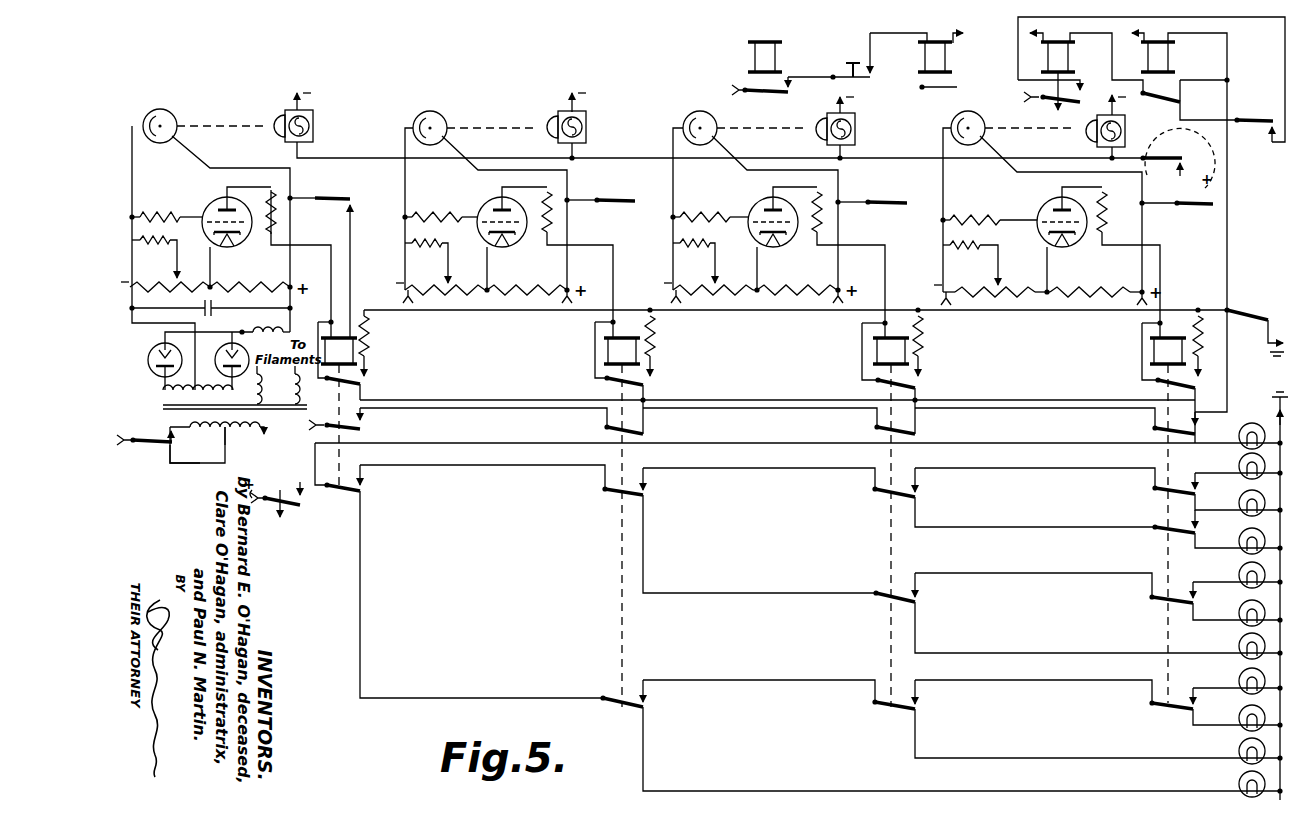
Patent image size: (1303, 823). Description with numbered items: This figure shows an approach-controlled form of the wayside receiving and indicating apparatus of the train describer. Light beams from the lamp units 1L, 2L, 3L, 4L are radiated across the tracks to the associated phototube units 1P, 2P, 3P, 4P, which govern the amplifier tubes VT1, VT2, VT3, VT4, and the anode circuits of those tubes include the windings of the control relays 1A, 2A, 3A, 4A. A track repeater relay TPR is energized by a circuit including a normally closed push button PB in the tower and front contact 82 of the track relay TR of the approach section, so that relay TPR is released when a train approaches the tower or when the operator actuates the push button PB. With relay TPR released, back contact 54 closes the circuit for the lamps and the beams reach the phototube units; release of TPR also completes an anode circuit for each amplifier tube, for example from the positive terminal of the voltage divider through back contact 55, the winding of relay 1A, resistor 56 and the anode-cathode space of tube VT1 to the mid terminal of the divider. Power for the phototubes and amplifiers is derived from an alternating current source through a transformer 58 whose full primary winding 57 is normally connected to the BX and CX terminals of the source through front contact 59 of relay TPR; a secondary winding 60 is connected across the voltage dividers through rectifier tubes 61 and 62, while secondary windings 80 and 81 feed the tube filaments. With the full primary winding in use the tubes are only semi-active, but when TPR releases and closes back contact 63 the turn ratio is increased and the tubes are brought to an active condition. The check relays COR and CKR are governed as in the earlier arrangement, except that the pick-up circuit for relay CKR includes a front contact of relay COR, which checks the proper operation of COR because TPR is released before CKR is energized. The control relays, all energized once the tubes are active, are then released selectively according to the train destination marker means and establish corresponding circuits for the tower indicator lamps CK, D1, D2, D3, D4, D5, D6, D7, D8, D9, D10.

The receiving relay 1P is at (166, 114).
The receiving relay 2P is at (436, 114).
The receiving relay 3P is at (695, 116).
The receiving relay 4P is at (958, 114).
The light source 1L is at (288, 112).
The light source 2L is at (558, 114).
The light source 3L is at (852, 113).
The light source 4L is at (1131, 124).
The amplifier tube VT1 is at (221, 198).
The vacuum tube VT2 is at (492, 198).
The vacuum tube VT3 is at (765, 198).
The vacuum tube VT4 is at (1045, 201).
The track repeater relay TPR is at (697, 242).
The back contact of relay TPR 55 is at (348, 216).
The resistor 56 is at (268, 235).
The track relay TR is at (764, 43).
The push button PB is at (845, 58).
The front contact of track relay TR 82 is at (779, 92).
The check relay CKR is at (1052, 58).
The check relay COR is at (1160, 56).
The back contact of relay TPR 54 is at (1183, 158).
The relay 1A is at (353, 353).
The relay 2A is at (607, 352).
The relay 3A is at (875, 352).
The relay 4A is at (1153, 353).
The check lamp CK is at (1234, 433).
The indicator lamp D1 is at (1235, 465).
The indicator lamp D2 is at (1235, 501).
The indicator lamp D3 is at (1235, 538).
The indicator lamp D4 is at (1235, 571).
The indicator lamp D5 is at (1235, 609).
The indicator lamp D6 is at (1235, 643).
The indicator lamp D7 is at (1235, 678).
The indicator lamp D8 is at (1235, 715).
The indicator lamp D9 is at (1231, 749).
The indicator lamp D10 is at (1229, 783).
The rectifier tube 62 is at (250, 330).
The rectifier tube 61 is at (150, 352).
The secondary winding 60 is at (163, 390).
The secondary winding 80 is at (258, 387).
The secondary winding 81 is at (294, 387).
The transformer 58 is at (334, 412).
The front contact of relay TPR 59 is at (197, 445).
The terminal of alternating current source CX is at (244, 437).
The primary winding 57 is at (230, 432).
The back contact of relay TPR 63 is at (170, 452).
The terminal of alternating current source BX is at (127, 450).